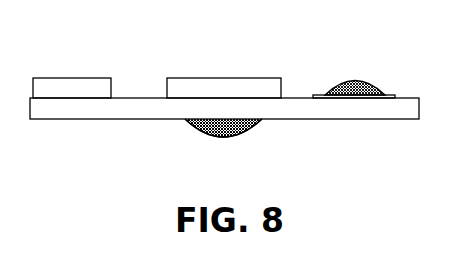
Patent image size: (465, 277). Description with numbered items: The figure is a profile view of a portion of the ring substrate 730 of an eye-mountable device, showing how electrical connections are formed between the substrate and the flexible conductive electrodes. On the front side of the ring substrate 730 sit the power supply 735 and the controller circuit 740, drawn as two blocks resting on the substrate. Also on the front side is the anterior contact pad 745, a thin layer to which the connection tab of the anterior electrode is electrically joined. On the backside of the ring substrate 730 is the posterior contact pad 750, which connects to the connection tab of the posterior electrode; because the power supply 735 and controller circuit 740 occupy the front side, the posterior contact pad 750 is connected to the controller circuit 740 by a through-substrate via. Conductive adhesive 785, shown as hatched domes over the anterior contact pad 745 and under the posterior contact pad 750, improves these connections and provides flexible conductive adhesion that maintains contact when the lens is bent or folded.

The ring substrate 730 is at (90, 106).
The power supply 735 is at (83, 75).
The controller circuit 740 is at (223, 73).
The anterior contact pad 745 is at (315, 91).
The posterior contact pad 750 is at (183, 123).
The conductive adhesive 785 is at (352, 77).